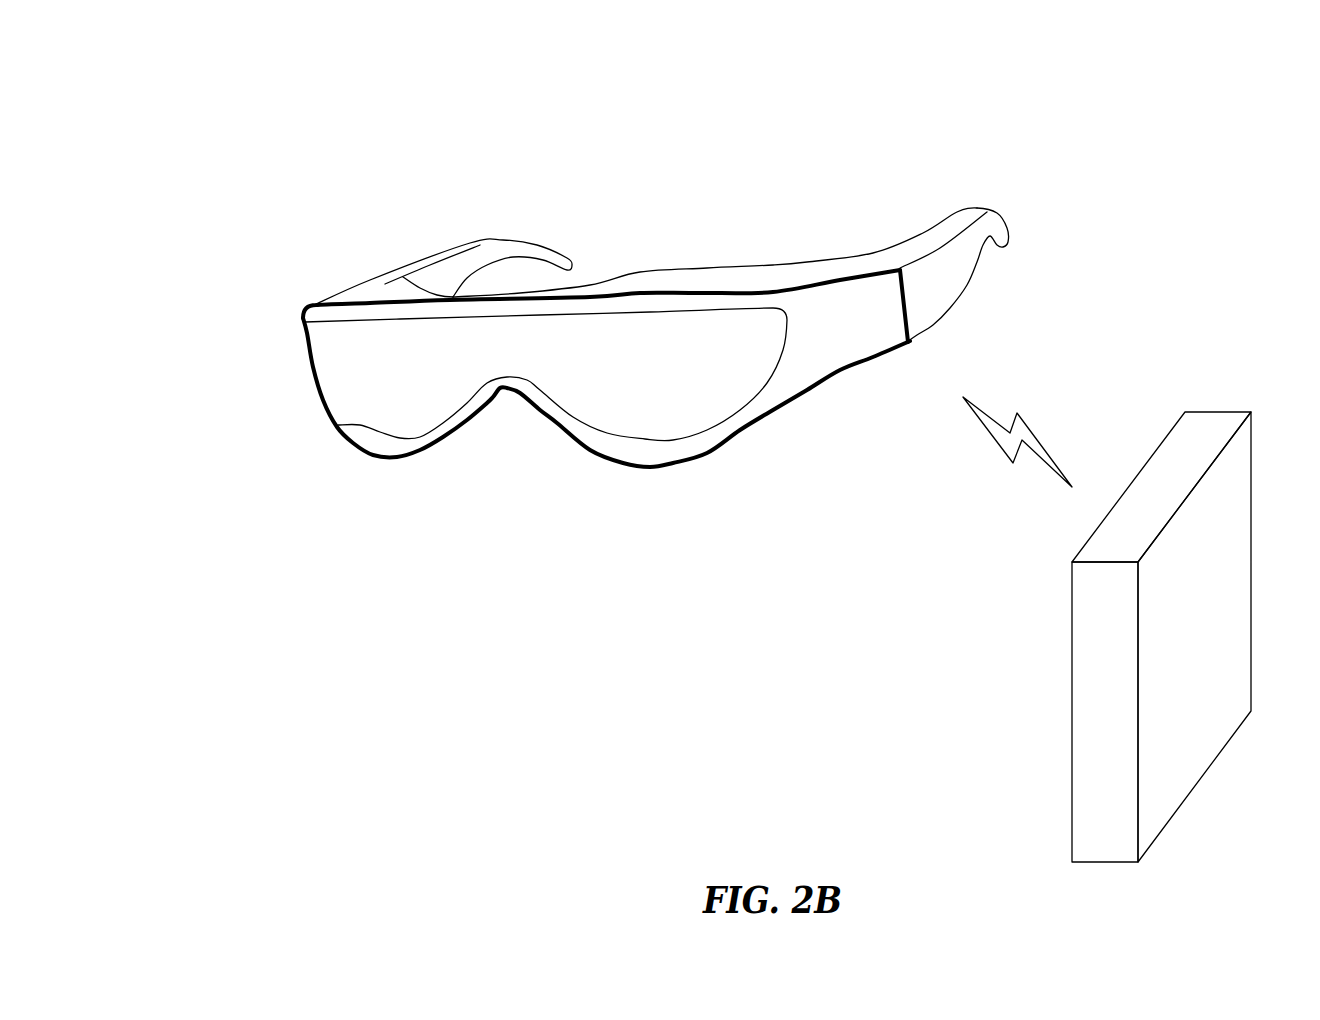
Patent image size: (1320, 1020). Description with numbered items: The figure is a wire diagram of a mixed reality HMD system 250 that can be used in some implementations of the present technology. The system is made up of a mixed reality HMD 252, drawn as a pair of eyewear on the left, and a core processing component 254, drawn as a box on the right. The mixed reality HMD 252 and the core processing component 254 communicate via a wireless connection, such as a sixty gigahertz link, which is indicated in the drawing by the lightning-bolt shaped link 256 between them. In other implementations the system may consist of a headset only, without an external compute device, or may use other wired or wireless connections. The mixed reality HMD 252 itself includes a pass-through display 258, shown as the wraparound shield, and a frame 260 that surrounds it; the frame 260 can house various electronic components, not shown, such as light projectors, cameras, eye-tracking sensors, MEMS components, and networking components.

The mixed reality HMD system 250 is at (264, 125).
The mixed reality HMD 252 is at (303, 321).
The core processing component 254 is at (1072, 638).
The link 256 is at (1003, 462).
The pass-through display 258 is at (787, 313).
The frame 260 is at (937, 278).